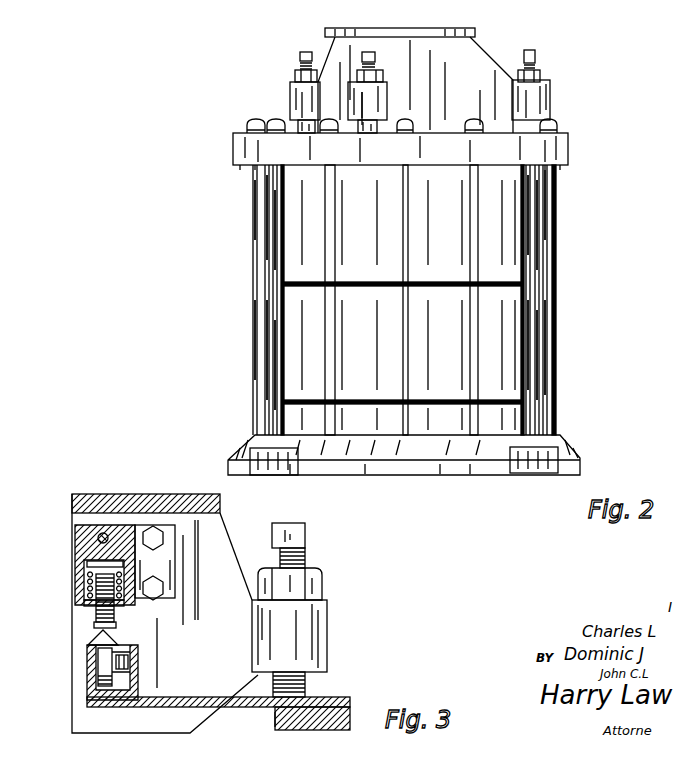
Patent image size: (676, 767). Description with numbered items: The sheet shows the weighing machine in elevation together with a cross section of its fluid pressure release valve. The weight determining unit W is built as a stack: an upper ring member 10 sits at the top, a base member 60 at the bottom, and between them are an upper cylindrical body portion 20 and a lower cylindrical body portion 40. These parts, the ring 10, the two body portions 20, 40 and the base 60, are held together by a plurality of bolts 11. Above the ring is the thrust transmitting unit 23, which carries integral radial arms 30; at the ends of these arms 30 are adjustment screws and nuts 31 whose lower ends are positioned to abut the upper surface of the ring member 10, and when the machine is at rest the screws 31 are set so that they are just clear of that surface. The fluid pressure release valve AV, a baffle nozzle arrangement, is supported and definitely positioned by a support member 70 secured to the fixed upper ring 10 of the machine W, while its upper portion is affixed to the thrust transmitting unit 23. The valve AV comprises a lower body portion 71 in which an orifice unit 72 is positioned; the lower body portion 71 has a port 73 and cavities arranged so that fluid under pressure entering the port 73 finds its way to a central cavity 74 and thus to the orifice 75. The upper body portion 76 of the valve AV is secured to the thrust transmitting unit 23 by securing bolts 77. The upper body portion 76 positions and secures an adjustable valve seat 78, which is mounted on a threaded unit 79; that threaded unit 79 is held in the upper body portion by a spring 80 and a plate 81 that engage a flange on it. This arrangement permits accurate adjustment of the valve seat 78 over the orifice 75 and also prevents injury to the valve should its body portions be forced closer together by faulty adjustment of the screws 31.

In FIG. 2, the thrust transmitting unit 23 is at (338, 50).
In FIG. 2, the radial arms 30 is at (475, 48).
In FIG. 3, the radial arms 30 is at (215, 540).
In FIG. 2, the adjustment screws and nuts 31 is at (537, 53).
In FIG. 3, the adjustment screws and nuts 31 is at (305, 558).
In FIG. 2, the weight determining unit W is at (572, 146).
In FIG. 3, the weight determining unit W is at (352, 710).
In FIG. 2, the upper ring member 10 is at (572, 158).
In FIG. 3, the upper ring member 10 is at (276, 722).
In FIG. 2, the bolts 11 is at (556, 210).
In FIG. 2, the upper cylindrical body portion 20 is at (513, 240).
In FIG. 2, the lower cylindrical body portion 40 is at (513, 353).
In FIG. 2, the base member 60 is at (570, 449).
In FIG. 3, the fluid pressure release valve AV is at (75, 552).
In FIG. 3, the upper body portion 76 is at (222, 538).
In FIG. 3, the securing bolts 77 is at (160, 585).
In FIG. 3, the threaded unit 79 is at (88, 583).
In FIG. 3, the spring 80 is at (92, 590).
In FIG. 3, the plate 81 is at (84, 602).
In FIG. 3, the adjustable valve seat 78 is at (94, 625).
In FIG. 3, the orifice 75 is at (96, 636).
In FIG. 3, the lower body portion 71 is at (140, 680).
In FIG. 3, the central cavity 74 is at (98, 664).
In FIG. 3, the orifice unit 72 is at (125, 645).
In FIG. 3, the port 73 is at (130, 660).
In FIG. 3, the support member 70 is at (325, 697).